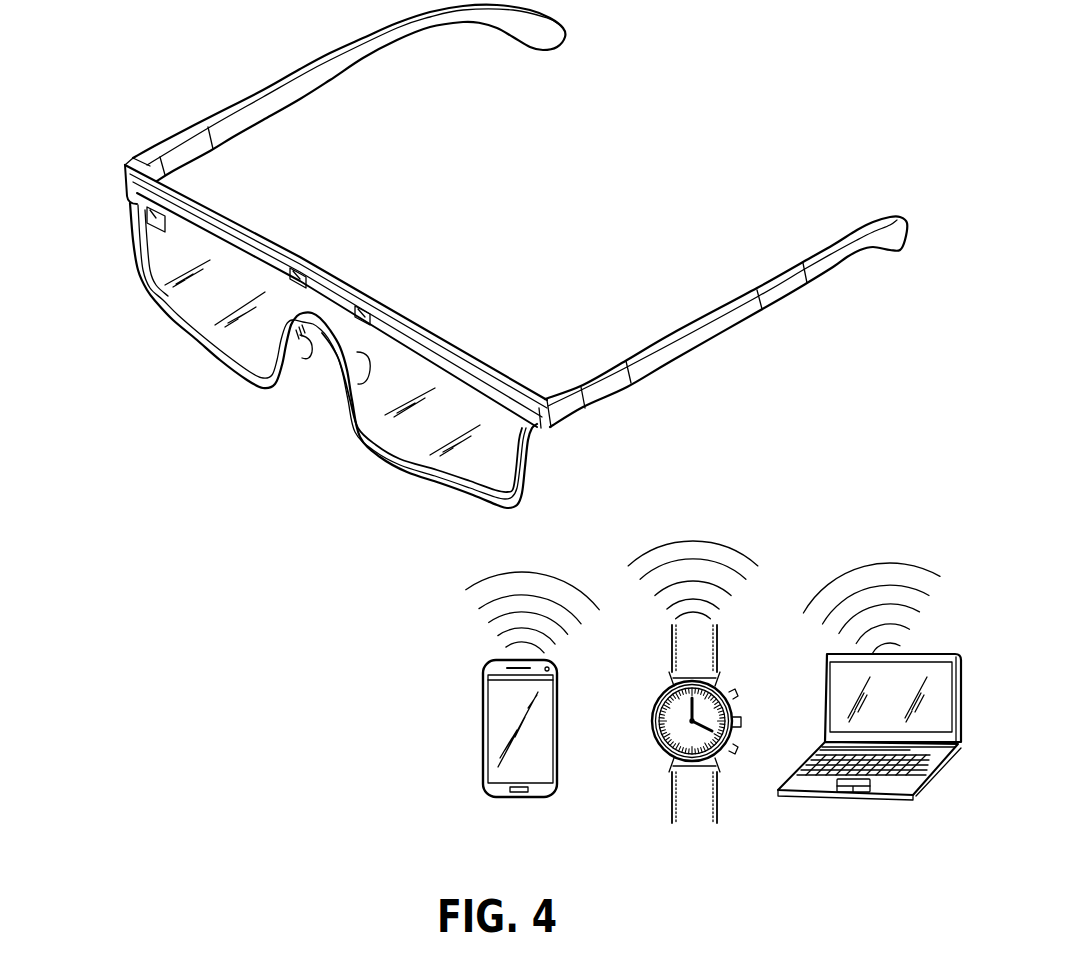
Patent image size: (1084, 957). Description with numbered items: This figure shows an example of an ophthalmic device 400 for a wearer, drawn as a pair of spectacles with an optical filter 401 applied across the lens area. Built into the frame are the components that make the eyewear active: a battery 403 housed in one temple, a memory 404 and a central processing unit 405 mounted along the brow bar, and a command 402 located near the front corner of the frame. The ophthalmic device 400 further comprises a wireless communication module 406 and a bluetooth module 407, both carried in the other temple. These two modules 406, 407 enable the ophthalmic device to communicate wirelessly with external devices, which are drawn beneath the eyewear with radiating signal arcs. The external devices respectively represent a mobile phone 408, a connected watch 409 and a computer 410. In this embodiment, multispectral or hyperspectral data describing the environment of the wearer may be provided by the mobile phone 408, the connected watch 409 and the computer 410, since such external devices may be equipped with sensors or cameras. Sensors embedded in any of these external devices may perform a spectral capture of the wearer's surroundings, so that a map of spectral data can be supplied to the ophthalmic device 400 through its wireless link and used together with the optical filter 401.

The ophthalmic device 400 is at (860, 228).
The optical filter 401 is at (230, 328).
The command 402 is at (140, 200).
The battery 403 is at (182, 132).
The memory 404 is at (300, 268).
The central processing unit 405 is at (370, 307).
The wireless communication module 406 is at (602, 387).
The bluetooth module 407 is at (783, 287).
The mobile phone 408 is at (540, 790).
The connected watch 409 is at (703, 812).
The computer 410 is at (893, 787).